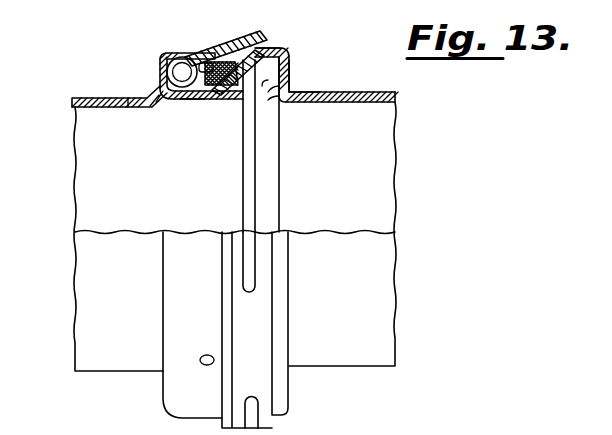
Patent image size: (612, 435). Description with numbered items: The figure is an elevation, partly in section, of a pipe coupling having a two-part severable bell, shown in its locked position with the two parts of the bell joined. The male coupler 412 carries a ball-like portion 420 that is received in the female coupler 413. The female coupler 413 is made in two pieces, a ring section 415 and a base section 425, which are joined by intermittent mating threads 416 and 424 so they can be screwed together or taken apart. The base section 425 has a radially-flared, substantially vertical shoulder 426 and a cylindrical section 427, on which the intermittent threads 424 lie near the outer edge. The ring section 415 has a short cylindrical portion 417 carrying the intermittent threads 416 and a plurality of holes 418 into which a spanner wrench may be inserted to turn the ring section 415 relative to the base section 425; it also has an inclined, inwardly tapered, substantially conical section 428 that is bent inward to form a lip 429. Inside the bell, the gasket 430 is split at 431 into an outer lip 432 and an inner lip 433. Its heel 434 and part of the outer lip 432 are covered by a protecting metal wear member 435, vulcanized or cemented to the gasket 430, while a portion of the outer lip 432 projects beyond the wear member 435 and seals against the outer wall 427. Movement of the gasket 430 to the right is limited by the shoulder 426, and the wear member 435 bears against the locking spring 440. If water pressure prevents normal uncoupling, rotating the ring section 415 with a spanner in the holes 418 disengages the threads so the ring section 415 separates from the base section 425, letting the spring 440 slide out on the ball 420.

The male coupler 412 is at (89, 107).
The female coupler 413 is at (372, 103).
The ring section 415 is at (170, 53).
The intermittent threads 416 is at (245, 56).
The short cylindrical portion 417 is at (209, 56).
The holes 418 is at (178, 52).
The ball-like portion 420 is at (185, 98).
The intermittent threads 424 is at (232, 58).
The base section 425 is at (290, 50).
The shoulder 426 is at (291, 84).
The cylindrical section 427 is at (277, 80).
The conical section 428 is at (163, 56).
The lip 429 is at (165, 78).
The gasket 430 is at (209, 92).
The split 431 is at (262, 86).
The outer lip 432 is at (268, 92).
The inner lip 433 is at (272, 100).
The heel 434 is at (205, 99).
The wear member 435 is at (197, 99).
The locking spring 440 is at (128, 107).